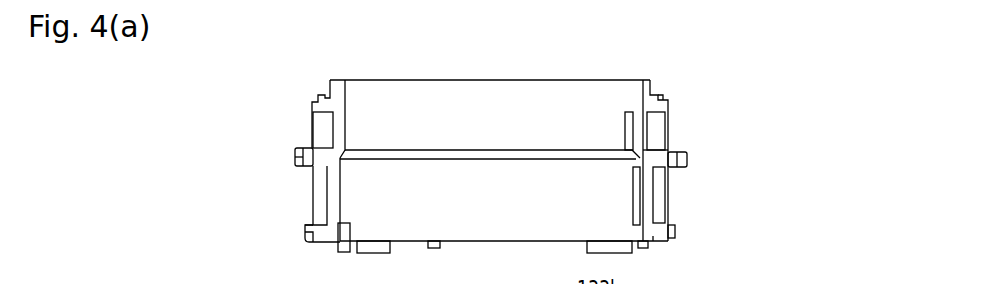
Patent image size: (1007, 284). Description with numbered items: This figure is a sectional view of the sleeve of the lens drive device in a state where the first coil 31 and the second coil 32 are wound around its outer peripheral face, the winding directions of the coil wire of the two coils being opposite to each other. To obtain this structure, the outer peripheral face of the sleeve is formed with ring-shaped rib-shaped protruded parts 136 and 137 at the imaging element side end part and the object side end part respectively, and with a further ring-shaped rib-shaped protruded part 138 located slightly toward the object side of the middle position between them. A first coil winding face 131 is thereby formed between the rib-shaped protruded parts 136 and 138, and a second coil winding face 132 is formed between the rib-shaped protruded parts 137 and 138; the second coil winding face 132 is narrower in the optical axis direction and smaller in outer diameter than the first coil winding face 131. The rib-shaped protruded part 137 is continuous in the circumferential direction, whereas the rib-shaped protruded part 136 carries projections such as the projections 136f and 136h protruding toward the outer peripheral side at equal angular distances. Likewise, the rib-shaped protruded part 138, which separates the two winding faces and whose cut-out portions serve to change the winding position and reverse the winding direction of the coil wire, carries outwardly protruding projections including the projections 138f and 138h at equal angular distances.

The first coil winding face 131 is at (633, 195).
The second coil winding face 132 is at (625, 128).
The rib-shaped protruded part 136 is at (655, 238).
The projection 136f is at (676, 231).
The projection 136h is at (306, 233).
The rib-shaped protruded part 137 is at (665, 100).
The rib-shaped protruded part 138 is at (663, 150).
The projection 138f is at (688, 160).
The projection 138h is at (296, 158).
The first coil 31 is at (668, 130).
The second coil 32 is at (668, 192).